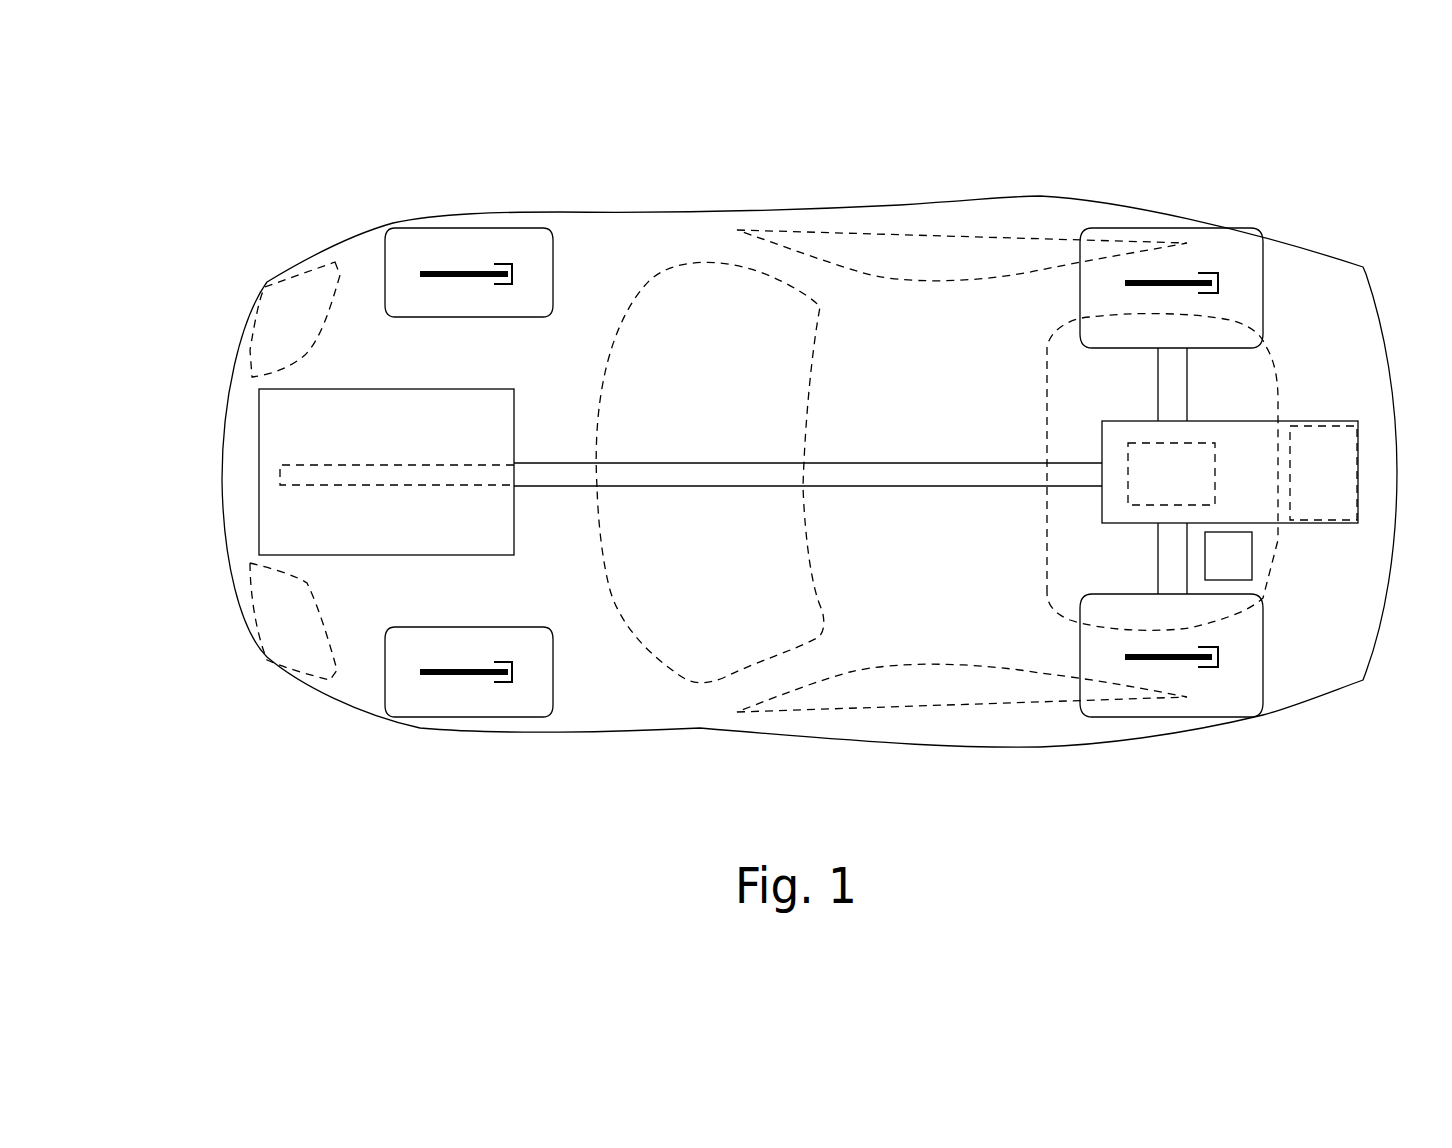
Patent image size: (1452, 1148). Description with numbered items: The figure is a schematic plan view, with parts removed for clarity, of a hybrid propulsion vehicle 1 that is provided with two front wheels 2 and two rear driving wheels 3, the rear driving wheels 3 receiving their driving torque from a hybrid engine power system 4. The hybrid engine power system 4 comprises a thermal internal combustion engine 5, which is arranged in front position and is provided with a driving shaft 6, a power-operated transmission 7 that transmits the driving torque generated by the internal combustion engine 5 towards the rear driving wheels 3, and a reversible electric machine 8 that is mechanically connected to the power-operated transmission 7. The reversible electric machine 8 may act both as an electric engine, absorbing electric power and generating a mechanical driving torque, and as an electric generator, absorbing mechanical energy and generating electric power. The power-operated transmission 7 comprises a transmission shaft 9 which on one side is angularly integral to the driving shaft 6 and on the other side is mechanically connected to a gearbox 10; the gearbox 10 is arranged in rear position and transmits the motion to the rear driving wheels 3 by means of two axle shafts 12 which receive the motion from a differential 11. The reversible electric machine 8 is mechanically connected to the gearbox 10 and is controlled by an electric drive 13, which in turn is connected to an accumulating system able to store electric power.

The hybrid propulsion vehicle 1 is at (1337, 767).
The front wheels 2 is at (407, 245).
The rear driving wheels 3 is at (1247, 244).
The hybrid engine power system 4 is at (306, 236).
The thermal internal combustion engine 5 is at (268, 416).
The driving shaft 6 is at (375, 470).
The power-operated transmission 7 is at (841, 190).
The reversible electric machine 8 is at (1323, 473).
The transmission shaft 9 is at (858, 477).
The gearbox 10 is at (1113, 510).
The differential 11 is at (1171, 474).
The axle shafts 12 is at (1168, 373).
The electric drive 13 is at (1228, 556).